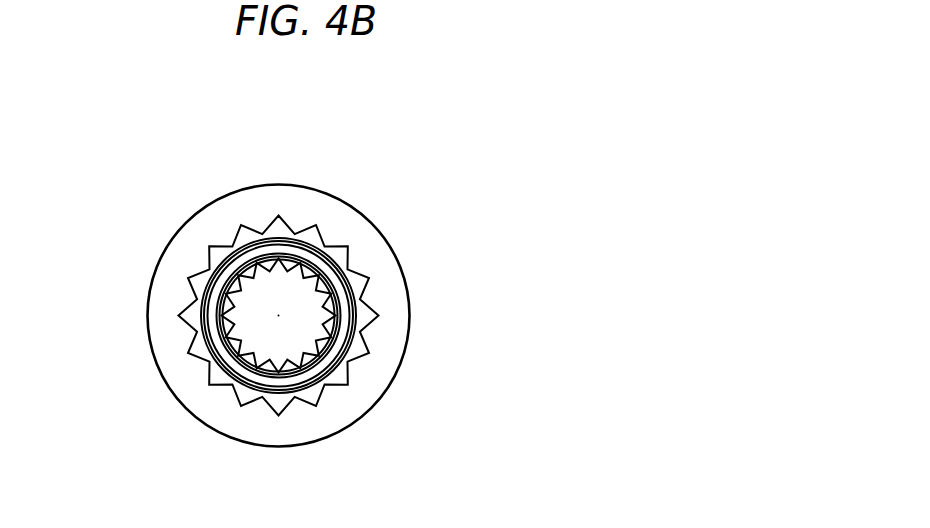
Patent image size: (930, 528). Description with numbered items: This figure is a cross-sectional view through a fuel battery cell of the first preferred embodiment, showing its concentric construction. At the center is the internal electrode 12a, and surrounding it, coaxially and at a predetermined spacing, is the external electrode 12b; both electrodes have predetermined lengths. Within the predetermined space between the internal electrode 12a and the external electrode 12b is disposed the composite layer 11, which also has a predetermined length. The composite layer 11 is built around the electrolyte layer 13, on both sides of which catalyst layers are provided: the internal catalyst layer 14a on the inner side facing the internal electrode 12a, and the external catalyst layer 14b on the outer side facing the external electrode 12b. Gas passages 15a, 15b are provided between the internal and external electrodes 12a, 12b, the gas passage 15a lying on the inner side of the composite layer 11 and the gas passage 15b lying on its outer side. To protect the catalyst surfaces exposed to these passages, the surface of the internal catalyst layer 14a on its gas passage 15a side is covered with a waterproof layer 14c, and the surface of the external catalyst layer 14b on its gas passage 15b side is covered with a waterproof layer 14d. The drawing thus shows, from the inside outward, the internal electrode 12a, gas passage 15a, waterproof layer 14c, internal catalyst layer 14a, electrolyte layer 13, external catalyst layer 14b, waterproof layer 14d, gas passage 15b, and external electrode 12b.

The composite layer 11 is at (533, 289).
The internal electrode 12a is at (303, 332).
The external electrode 12b is at (300, 222).
The electrolyte layer 13 is at (352, 280).
The internal catalyst layer 14a is at (342, 322).
The external catalyst layer 14b is at (345, 262).
The waterproof layer 14c is at (346, 338).
The waterproof layer 14d is at (345, 250).
The gas passage 15a is at (222, 248).
The gas passage 15b is at (275, 228).